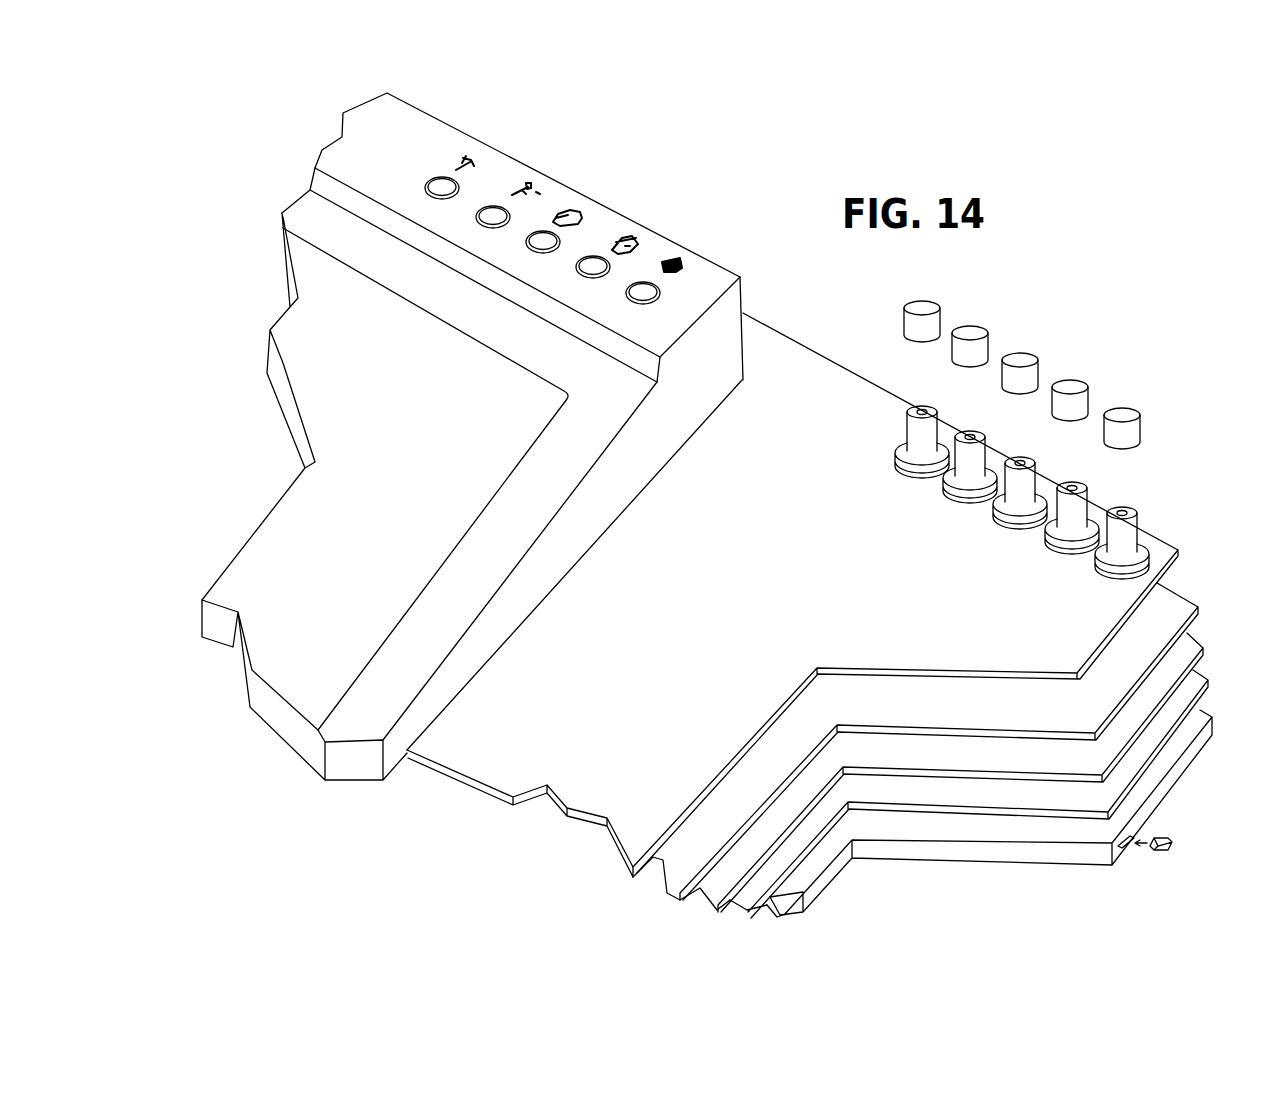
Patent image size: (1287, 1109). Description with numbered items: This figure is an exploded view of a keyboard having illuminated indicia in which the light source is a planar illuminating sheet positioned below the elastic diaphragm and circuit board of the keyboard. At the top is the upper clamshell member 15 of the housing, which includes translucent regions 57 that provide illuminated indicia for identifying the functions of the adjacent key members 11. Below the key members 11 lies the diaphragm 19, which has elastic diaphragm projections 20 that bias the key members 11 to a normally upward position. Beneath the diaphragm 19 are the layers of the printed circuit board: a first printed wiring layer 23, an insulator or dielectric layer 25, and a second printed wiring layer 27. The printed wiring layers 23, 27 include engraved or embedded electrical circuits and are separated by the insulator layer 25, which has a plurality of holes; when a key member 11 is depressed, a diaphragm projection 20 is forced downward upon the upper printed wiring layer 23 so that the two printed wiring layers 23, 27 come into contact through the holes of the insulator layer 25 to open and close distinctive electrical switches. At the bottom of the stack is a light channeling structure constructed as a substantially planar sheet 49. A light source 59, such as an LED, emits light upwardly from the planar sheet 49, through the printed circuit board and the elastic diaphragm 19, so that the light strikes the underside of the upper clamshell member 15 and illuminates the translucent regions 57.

The upper clamshell member 15 is at (744, 294).
The translucent regions 57 is at (613, 227).
The key members 11 is at (1021, 359).
The elastic diaphragm projections 20 is at (1022, 460).
The diaphragm 19 is at (1179, 558).
The first printed wiring layer 23 is at (1200, 617).
The insulator layer 25 is at (1208, 657).
The second printed wiring layer 27 is at (1214, 692).
The planar sheet 49 is at (1213, 733).
The light source 59 is at (1173, 843).